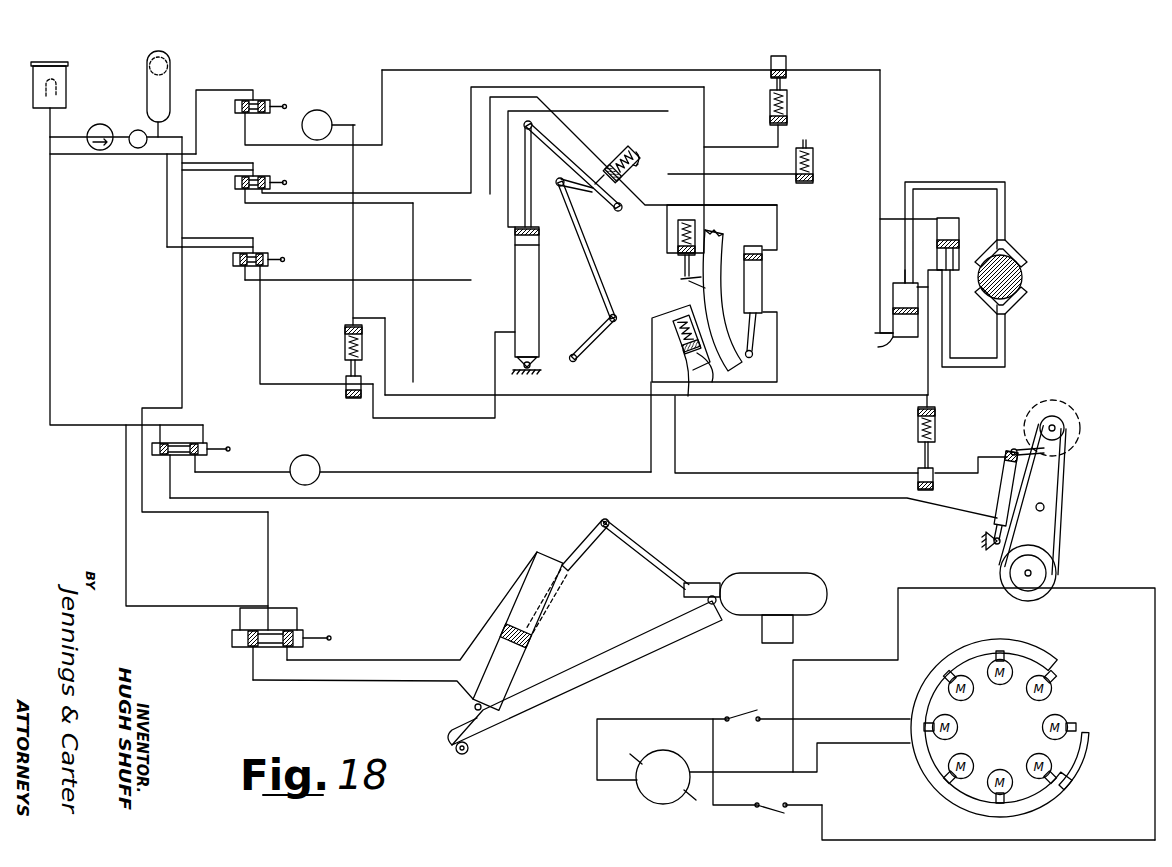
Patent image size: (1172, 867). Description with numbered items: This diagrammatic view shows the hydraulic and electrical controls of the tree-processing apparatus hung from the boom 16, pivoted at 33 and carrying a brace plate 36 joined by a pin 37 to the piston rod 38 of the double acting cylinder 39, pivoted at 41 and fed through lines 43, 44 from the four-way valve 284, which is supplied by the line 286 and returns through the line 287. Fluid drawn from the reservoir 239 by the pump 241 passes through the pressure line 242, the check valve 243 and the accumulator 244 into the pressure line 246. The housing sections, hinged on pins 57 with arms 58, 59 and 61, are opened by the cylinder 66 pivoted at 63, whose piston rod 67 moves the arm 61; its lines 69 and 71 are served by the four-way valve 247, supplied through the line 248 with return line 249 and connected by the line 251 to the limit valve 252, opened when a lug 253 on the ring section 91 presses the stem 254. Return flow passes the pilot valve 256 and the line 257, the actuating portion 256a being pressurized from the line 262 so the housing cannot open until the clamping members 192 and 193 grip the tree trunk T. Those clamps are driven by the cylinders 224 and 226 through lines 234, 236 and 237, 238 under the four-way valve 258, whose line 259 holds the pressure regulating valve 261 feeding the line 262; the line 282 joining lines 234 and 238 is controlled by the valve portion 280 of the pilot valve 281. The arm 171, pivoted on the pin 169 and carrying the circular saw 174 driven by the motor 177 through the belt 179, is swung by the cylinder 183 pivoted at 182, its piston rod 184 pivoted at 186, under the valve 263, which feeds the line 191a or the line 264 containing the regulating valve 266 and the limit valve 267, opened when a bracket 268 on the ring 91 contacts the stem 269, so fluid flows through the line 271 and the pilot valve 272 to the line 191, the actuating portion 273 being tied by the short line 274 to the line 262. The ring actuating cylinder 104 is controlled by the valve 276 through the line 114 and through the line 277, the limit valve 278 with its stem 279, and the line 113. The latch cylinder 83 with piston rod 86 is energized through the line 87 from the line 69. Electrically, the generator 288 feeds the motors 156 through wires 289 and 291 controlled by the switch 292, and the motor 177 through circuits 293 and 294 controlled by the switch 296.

The boom 16 is at (590, 680).
The pivot 33 is at (711, 606).
The brace plate 36 is at (652, 550).
The pin 37 is at (609, 523).
The piston rod 38 is at (590, 556).
The double acting fluid pressure cylinder 39 is at (555, 616).
The pivot 41 is at (484, 736).
The fluid pressure line 43 is at (408, 659).
The fluid pressure line 44 is at (420, 681).
The pin 57 is at (618, 213).
The arm 58 is at (600, 340).
The arm 59 is at (570, 193).
The arm 61 is at (566, 146).
The pivot 63 is at (527, 370).
The double acting fluid pressure cylinder 66 is at (514, 296).
The piston rod 67 is at (532, 201).
The fluid pressure line 69 is at (508, 219).
The fluid pressure line 71 is at (495, 345).
The fluid pressure cylinder 83 is at (813, 176).
The piston rod 86 is at (807, 147).
The line 87 is at (772, 160).
The ring section 91 is at (728, 248).
The fluid pressure cylinder 104 is at (763, 286).
The line 113 is at (777, 215).
The line 114 is at (414, 352).
The electric motor 156 is at (1042, 728).
The pin 169 is at (1044, 505).
The arm 171 is at (1046, 473).
The circular saw 174 is at (1070, 422).
The electric motor 177 is at (1056, 574).
The belt 179 is at (1056, 524).
The pivot 182 is at (1012, 450).
The fluid pressure cylinder 183 is at (1004, 458).
The piston rod 184 is at (994, 532).
The pivot 186 is at (992, 546).
The line 191 is at (978, 462).
The line 191a is at (454, 498).
The clamping member 192 is at (1012, 252).
The clamping member 193 is at (1015, 292).
The double acting fluid pressure cylinder 224 is at (880, 348).
The double acting fluid pressure cylinder 226 is at (950, 218).
The fluid pressure line 234 is at (875, 333).
The fluid pressure line 236 is at (893, 296).
The fluid pressure line 237 is at (915, 286).
The fluid pressure line 238 is at (876, 211).
The reservoir 239 is at (68, 92).
The pump 241 is at (99, 124).
The pressure line 242 is at (118, 150).
The check valve 243 is at (138, 150).
The accumulator 244 is at (171, 66).
The pressure line 246 is at (180, 290).
The valve 247 is at (234, 268).
The line 248 is at (211, 237).
The line 249 is at (166, 246).
The line 251 is at (603, 72).
The limit valve 252 is at (673, 257).
The lug 253 is at (690, 283).
The stem 254 is at (681, 278).
The pilot valve 256 is at (350, 407).
The actuating portion 256a is at (346, 342).
The line 257 is at (260, 352).
The valve 258 is at (230, 109).
The line 259 is at (262, 130).
The pressure regulating valve 261 is at (326, 114).
The line 262 is at (355, 256).
The valve 263 is at (155, 454).
The line 264 is at (376, 471).
The pressure and speed regulating valve 266 is at (313, 463).
The limit valve 267 is at (673, 343).
The bracket 268 is at (715, 384).
The stem 269 is at (689, 399).
The line 271 is at (770, 473).
The pilot valve 272 is at (916, 470).
The actuating portion 273 is at (917, 424).
The short line 274 is at (930, 396).
The valve 276 is at (230, 187).
The line 277 is at (400, 194).
The limit valve 278 is at (646, 158).
The stem 279 is at (608, 163).
The valve portion 280 is at (787, 67).
The pilot valve 281 is at (791, 111).
The line 282 is at (880, 145).
The valve 284 is at (271, 653).
The line 286 is at (270, 562).
The line 287 is at (128, 569).
The generator 288 is at (652, 750).
The wire 289 is at (868, 740).
The wire 291 is at (840, 718).
The switch 292 is at (767, 708).
The electrical circuit 293 is at (951, 588).
The wire 294 is at (871, 838).
The electric switch 296 is at (789, 801).
The wheel T is at (1024, 277).